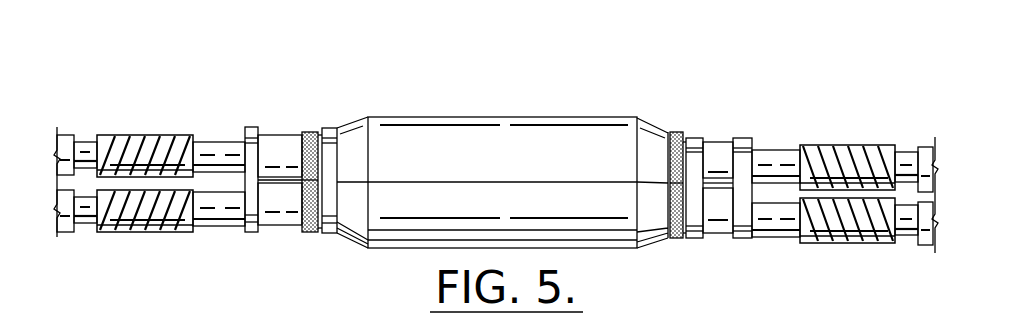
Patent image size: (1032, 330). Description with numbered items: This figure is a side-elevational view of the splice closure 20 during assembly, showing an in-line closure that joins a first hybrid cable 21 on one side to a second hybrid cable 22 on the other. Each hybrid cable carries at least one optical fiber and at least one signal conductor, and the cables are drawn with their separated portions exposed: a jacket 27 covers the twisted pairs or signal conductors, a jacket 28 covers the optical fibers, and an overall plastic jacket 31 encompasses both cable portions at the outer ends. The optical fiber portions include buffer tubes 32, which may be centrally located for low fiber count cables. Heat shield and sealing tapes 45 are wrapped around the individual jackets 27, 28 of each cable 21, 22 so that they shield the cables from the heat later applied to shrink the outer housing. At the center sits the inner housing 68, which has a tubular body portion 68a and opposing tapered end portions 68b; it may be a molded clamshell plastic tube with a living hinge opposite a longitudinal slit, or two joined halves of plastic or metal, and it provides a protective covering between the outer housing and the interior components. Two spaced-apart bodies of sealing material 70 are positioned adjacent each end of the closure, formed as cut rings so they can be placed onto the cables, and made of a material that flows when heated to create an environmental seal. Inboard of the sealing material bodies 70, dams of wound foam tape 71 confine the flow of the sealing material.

The splice closure 20 is at (496, 164).
The first hybrid cable 21 is at (904, 133).
The second hybrid cable 22 is at (95, 126).
The jacket for signal conductors 27 is at (509, 136).
The jacket for optical fibers 28 is at (496, 239).
The overall plastic jacket 31 is at (495, 240).
The buffer tube 32 is at (482, 216).
The heat shield and sealing tape 45 is at (498, 190).
The inner housing 68 is at (502, 154).
The tubular body portion 68a is at (500, 101).
The tapered end portion 68b is at (477, 151).
The body of sealing material 70 is at (481, 195).
The wound foam tape dam 71 is at (485, 210).